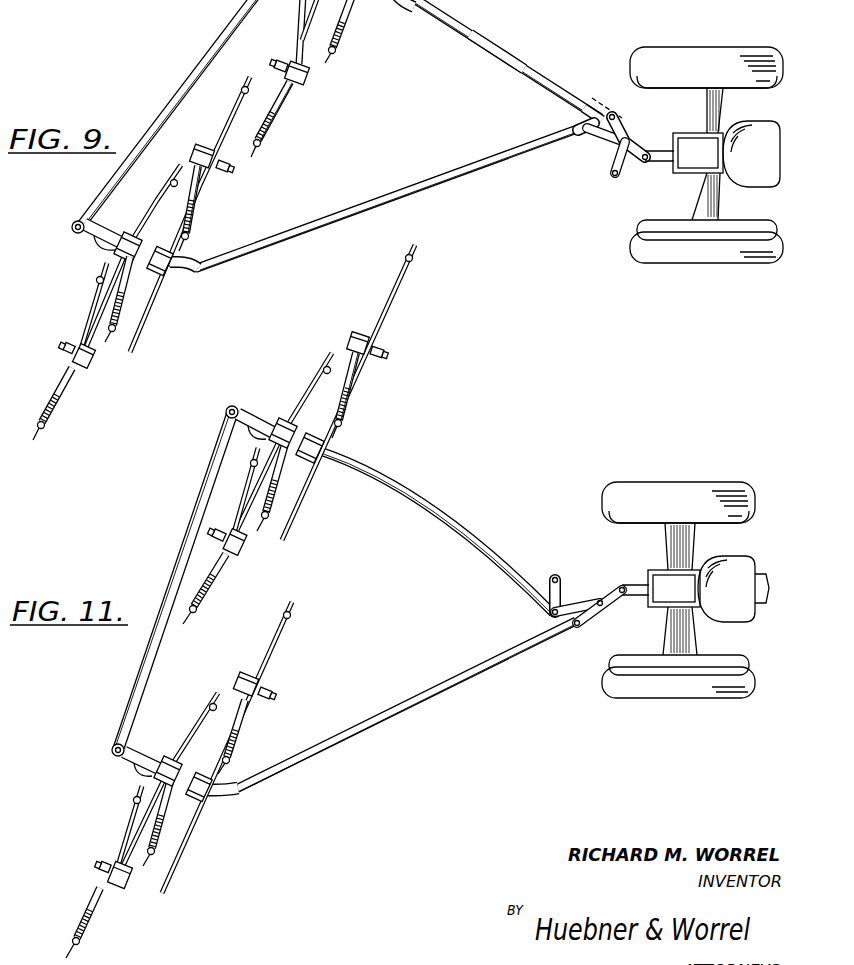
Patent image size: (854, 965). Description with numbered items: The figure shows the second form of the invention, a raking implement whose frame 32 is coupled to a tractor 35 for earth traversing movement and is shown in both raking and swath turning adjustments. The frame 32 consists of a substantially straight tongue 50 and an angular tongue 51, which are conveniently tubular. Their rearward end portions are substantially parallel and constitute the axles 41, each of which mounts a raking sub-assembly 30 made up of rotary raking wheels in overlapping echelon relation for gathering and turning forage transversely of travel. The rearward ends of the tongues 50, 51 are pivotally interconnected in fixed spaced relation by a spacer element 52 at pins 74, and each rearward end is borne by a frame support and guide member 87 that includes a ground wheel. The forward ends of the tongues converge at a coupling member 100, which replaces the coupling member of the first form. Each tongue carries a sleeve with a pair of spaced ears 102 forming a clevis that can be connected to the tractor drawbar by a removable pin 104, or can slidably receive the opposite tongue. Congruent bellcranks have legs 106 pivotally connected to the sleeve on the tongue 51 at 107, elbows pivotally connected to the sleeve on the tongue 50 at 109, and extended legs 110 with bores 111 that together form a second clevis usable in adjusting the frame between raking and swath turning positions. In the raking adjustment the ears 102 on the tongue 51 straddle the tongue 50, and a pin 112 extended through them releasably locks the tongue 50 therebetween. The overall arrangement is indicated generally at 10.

In FIG. 9, the steering linkage 10 is at (611, 143).
In FIG. 9, the raking sub-assembly 30 is at (206, 213).
In FIG. 11, the raking sub-assembly 30 is at (310, 463).
In FIG. 9, the frame 32 is at (498, 32).
In FIG. 11, the tractor 35 is at (768, 610).
In FIG. 9, the axle 41 is at (170, 274).
In FIG. 9, the straight tongue 50 is at (447, 23).
In FIG. 11, the straight tongue 50 is at (433, 515).
In FIG. 9, the angular tongue 51 is at (360, 206).
In FIG. 11, the angular tongue 51 is at (429, 696).
In FIG. 9, the spacer element 52 is at (196, 71).
In FIG. 11, the spacer element 52 is at (180, 562).
In FIG. 9, the pin 74 is at (78, 220).
In FIG. 11, the pin 74 is at (232, 405).
In FIG. 9, the frame support and guide member 87 is at (96, 250).
In FIG. 11, the frame support and guide member 87 is at (285, 421).
In FIG. 9, the coupling member 100 is at (641, 86).
In FIG. 11, the coupling member 100 is at (578, 592).
In FIG. 9, the ears 102 is at (582, 117).
In FIG. 9, the pin 104 is at (646, 161).
In FIG. 11, the pin 104 is at (620, 583).
In FIG. 9, the leg 106 is at (605, 148).
In FIG. 9, the pivot connection 107 is at (584, 135).
In FIG. 9, the pivot connection 109 is at (671, 115).
In FIG. 9, the extended leg 110 is at (632, 160).
In FIG. 9, the bore 111 is at (612, 178).
In FIG. 9, the pin 112 is at (612, 113).
In FIG. 11, the pin 112 is at (577, 628).